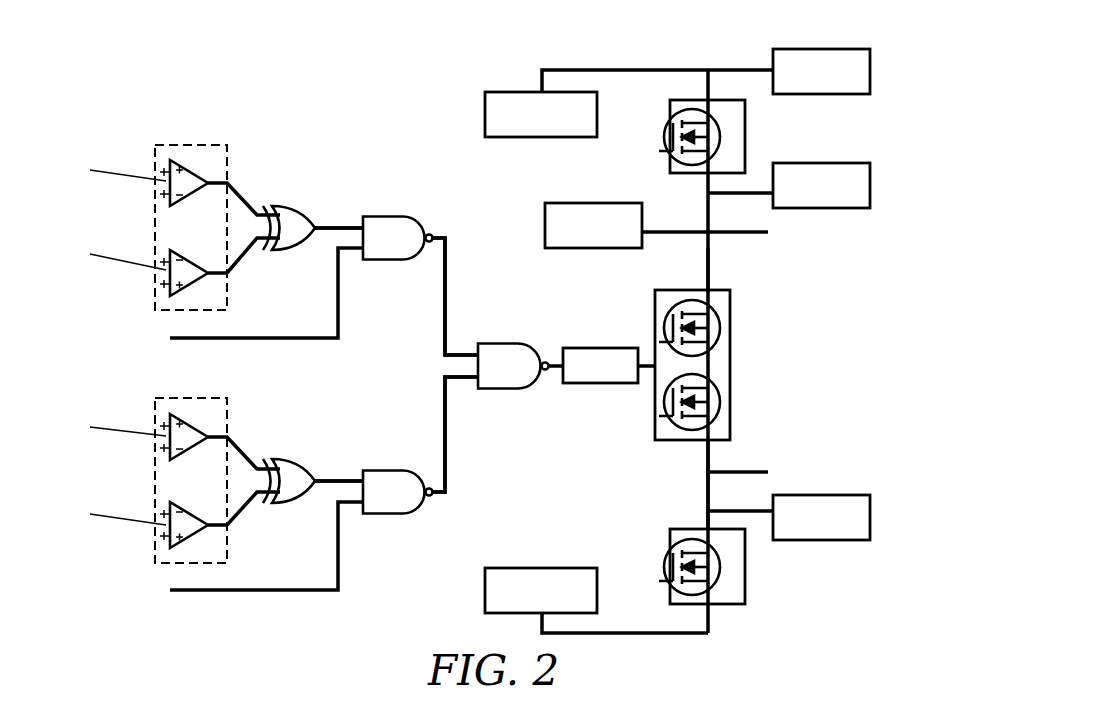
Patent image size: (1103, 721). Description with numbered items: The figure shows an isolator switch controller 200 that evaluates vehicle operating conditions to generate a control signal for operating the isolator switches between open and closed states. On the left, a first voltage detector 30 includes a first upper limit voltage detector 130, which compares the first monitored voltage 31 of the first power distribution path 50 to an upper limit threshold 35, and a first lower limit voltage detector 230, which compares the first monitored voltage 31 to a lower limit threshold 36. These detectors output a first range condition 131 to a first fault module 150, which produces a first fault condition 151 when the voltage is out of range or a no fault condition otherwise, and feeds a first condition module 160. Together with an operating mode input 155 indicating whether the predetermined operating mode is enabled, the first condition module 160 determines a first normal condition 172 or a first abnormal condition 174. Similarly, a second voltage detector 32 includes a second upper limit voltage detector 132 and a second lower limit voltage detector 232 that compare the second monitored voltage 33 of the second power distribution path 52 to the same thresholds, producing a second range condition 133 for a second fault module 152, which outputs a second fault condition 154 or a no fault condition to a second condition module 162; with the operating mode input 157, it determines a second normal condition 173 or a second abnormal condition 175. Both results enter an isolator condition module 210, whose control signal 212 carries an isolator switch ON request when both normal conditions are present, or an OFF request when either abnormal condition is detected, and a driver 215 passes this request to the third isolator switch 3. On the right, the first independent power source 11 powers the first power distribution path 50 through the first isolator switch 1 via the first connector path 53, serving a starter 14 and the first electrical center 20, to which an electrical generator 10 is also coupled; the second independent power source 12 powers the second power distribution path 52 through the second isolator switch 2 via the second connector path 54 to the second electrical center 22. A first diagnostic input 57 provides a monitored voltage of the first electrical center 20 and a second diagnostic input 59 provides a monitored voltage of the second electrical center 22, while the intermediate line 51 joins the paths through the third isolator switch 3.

The isolator switch controller 200 is at (206, 86).
The first voltage detector 30 is at (188, 145).
The first monitored voltage 31 is at (167, 171).
The first upper limit voltage detector 130 is at (108, 171).
The upper limit threshold 35 is at (167, 194).
The first lower limit voltage detector 230 is at (108, 257).
The lower limit threshold 36 is at (167, 284).
The first range condition 131 is at (252, 232).
The first fault module 150 is at (288, 212).
The first fault condition 151 is at (335, 226).
The first condition module 160 is at (416, 249).
The operating mode input 155 is at (300, 340).
The second voltage detector 32 is at (172, 397).
The second monitored voltage 33 is at (167, 425).
The second upper limit voltage detector 132 is at (108, 428).
The second lower limit voltage detector 232 is at (108, 515).
The second range condition 133 is at (252, 486).
The second fault module 152 is at (288, 466).
The second fault condition 154 is at (338, 479).
The second condition module 162 is at (416, 503).
The operating mode input 157 is at (290, 592).
The first normal condition 172 is at (450, 252).
The first abnormal condition 174 is at (455, 296).
The second normal condition 173 is at (450, 470).
The second abnormal condition 175 is at (455, 434).
The isolator condition module 210 is at (531, 377).
The control signal 212 is at (556, 371).
The driver 215 is at (600, 347).
The first independent power source 11 is at (515, 91).
The first connector path 53 is at (655, 69).
The starter 14 is at (820, 48).
The electrical generator 10 is at (585, 202).
The first power distribution path 50 is at (706, 207).
The first isolator switch 1 is at (747, 130).
The first electrical center 20 is at (848, 162).
The intermediate power line 51 is at (706, 255).
The first diagnostic input 57 is at (768, 234).
The third isolator switch 3 is at (732, 355).
The second diagnostic input 59 is at (768, 470).
The second power distribution path 52 is at (706, 500).
The second electrical center 22 is at (823, 541).
The second independent power source 12 is at (515, 567).
The second isolator switch 2 is at (747, 590).
The second connector path 54 is at (655, 634).